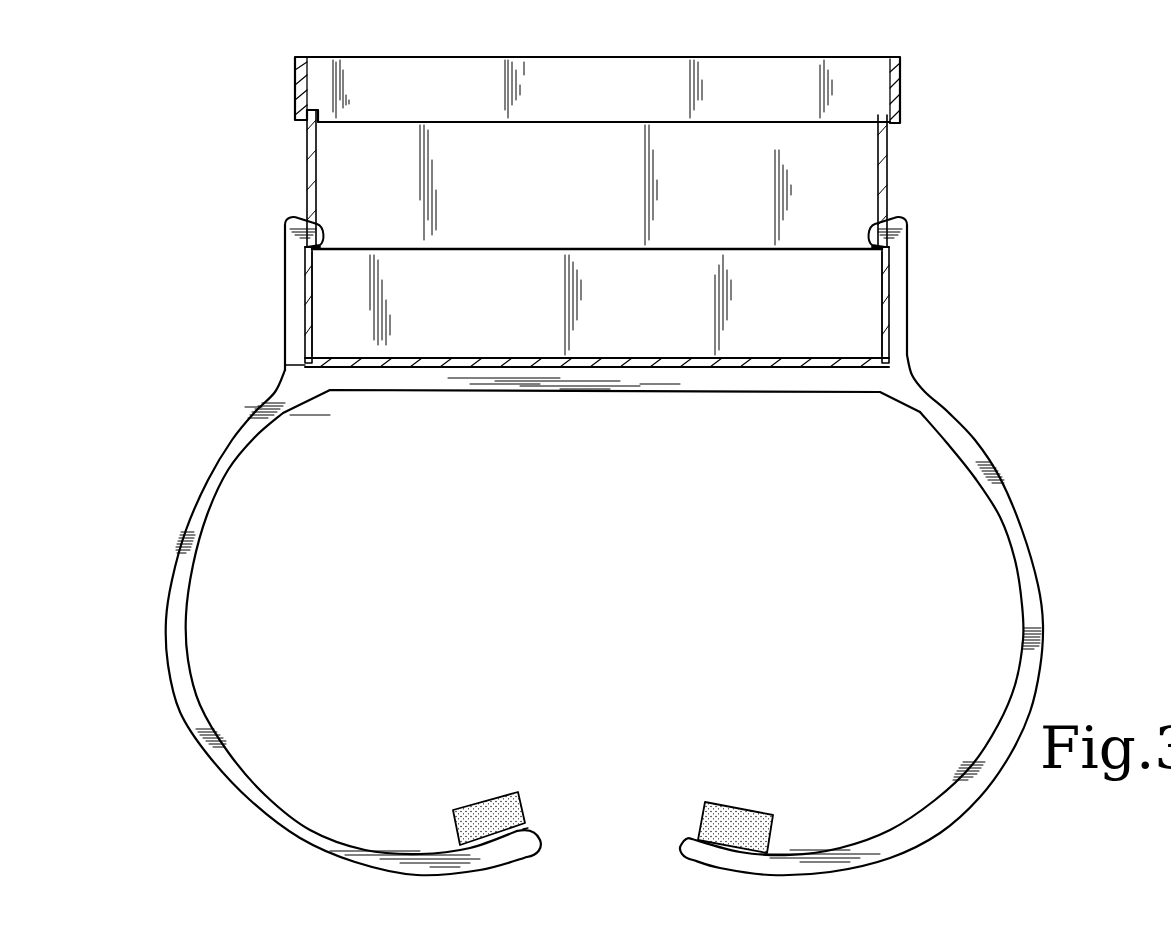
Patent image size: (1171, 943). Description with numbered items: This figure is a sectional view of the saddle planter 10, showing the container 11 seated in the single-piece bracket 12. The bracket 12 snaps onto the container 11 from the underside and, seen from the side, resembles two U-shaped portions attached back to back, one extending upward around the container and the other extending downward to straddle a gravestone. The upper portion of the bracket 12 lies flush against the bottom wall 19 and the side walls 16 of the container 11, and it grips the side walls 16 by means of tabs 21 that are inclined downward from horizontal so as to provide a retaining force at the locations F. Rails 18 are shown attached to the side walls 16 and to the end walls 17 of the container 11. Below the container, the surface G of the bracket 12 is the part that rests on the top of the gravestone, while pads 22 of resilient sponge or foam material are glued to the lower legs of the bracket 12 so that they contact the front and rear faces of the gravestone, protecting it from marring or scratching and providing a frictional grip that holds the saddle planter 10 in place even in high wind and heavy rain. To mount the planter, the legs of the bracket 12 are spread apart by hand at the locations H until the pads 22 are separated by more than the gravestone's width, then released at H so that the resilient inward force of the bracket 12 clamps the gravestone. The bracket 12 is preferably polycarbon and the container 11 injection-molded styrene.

The saddle planter 10 is at (248, 348).
The container 11 is at (612, 250).
The bracket 12 is at (930, 388).
The side walls 16 is at (315, 188).
The end walls 17 is at (317, 153).
The rails 18 is at (548, 58).
The bottom wall 19 is at (632, 359).
The tabs 21 is at (322, 232).
The pads 22 is at (490, 797).
The locations of retaining force F is at (313, 249).
The surface G is at (607, 395).
The locations for spreading bracket legs H is at (530, 832).